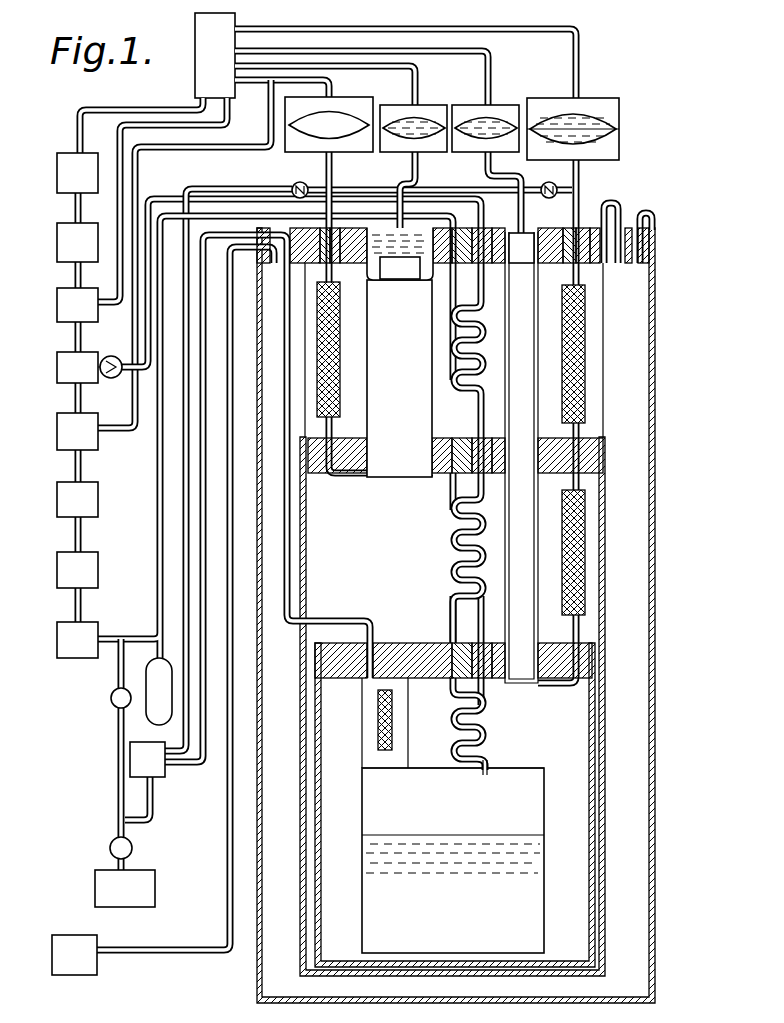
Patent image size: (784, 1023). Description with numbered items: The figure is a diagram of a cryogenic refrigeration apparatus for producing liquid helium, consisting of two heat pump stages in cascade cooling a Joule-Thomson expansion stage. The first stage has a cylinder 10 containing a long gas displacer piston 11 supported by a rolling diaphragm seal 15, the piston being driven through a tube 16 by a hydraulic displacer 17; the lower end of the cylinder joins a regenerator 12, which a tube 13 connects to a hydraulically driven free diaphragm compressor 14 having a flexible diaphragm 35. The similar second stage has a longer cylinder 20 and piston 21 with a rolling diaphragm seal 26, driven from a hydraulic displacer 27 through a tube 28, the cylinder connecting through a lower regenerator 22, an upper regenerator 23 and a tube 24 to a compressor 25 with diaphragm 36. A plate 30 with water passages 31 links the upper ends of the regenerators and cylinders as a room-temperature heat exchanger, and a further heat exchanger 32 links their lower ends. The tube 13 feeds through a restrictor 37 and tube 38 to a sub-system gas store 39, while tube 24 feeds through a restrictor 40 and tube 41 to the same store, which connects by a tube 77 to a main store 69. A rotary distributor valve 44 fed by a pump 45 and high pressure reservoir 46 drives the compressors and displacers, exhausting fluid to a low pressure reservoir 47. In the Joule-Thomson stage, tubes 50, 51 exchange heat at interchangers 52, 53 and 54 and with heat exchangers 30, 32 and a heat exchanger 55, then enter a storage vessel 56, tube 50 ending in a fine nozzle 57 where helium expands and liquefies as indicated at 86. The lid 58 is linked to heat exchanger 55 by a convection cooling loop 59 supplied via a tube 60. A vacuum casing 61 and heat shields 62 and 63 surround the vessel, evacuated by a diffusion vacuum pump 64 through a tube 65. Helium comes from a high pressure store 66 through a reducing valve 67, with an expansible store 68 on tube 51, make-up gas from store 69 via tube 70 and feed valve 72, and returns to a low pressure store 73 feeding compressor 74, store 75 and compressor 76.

The cylinder 10 is at (367, 347).
The gas displacer piston 11 is at (378, 387).
The regenerator 12 is at (318, 347).
The tube 13 is at (352, 187).
The hydraulically driven free diaphragm compressor 14 is at (372, 106).
The rolling diaphragm seal 15 is at (366, 264).
The tube 16 is at (408, 188).
The hydraulic displacer 17 is at (433, 112).
The second stage displacer cylinder 20 is at (556, 354).
The piston 21 is at (528, 402).
The lower regenerator 22 is at (588, 542).
The upper regenerator 23 is at (588, 302).
The tube 24 is at (582, 179).
The hydraulically driven compressor 25 is at (602, 112).
The rolling diaphragm seal 26 is at (540, 272).
The hydraulic displacer 27 is at (505, 110).
The tube 28 is at (524, 202).
The plate 30 is at (632, 272).
The passages 31 is at (609, 212).
The heat exchanger 32 is at (598, 446).
The flexible diaphragm 35 is at (345, 110).
The flexible diaphragm 36 is at (600, 142).
The restrictor 37 is at (294, 184).
The tube 38 is at (256, 190).
The sub-system gas store 39 is at (130, 758).
The restrictor 40 is at (548, 183).
The tube 41 is at (456, 189).
The rotary distributor valve 44 is at (194, 74).
The pump 45 is at (77, 242).
The high pressure reservoir 46 is at (77, 173).
The low pressure reservoir 47 is at (77, 305).
The tube 50 is at (160, 199).
The tube 51 is at (157, 472).
The heat exchanger 52 is at (481, 346).
The heat exchanger 53 is at (448, 571).
The heat exchanger 54 is at (452, 723).
The heat exchanger 55 is at (437, 652).
The storage vessel 56 is at (520, 797).
The fine nozzle 57 is at (491, 768).
The lid 58 is at (440, 747).
The convection cooling loop 59 is at (378, 724).
The tube 60 is at (178, 768).
The vacuum casing 61 is at (258, 868).
The heat shield 62 is at (604, 796).
The heat shield 63 is at (596, 736).
The diffusion vacuum pump 64 is at (95, 951).
The tube 65 is at (243, 262).
The high pressure store 66 is at (77, 367).
The reducing valve 67 is at (111, 356).
The expansible helium store 68 is at (146, 682).
The main store 69 is at (106, 880).
The tube 70 is at (117, 801).
The feed valve 72 is at (112, 703).
The low pressure store 73 is at (77, 640).
The first stage mechanically driven diaphragm compressor 74 is at (77, 570).
The store 75 is at (77, 499).
The hydraulically driven diaphragm compressor 76 is at (77, 431).
The tube 77 is at (153, 814).
The liquid helium 86 is at (520, 886).